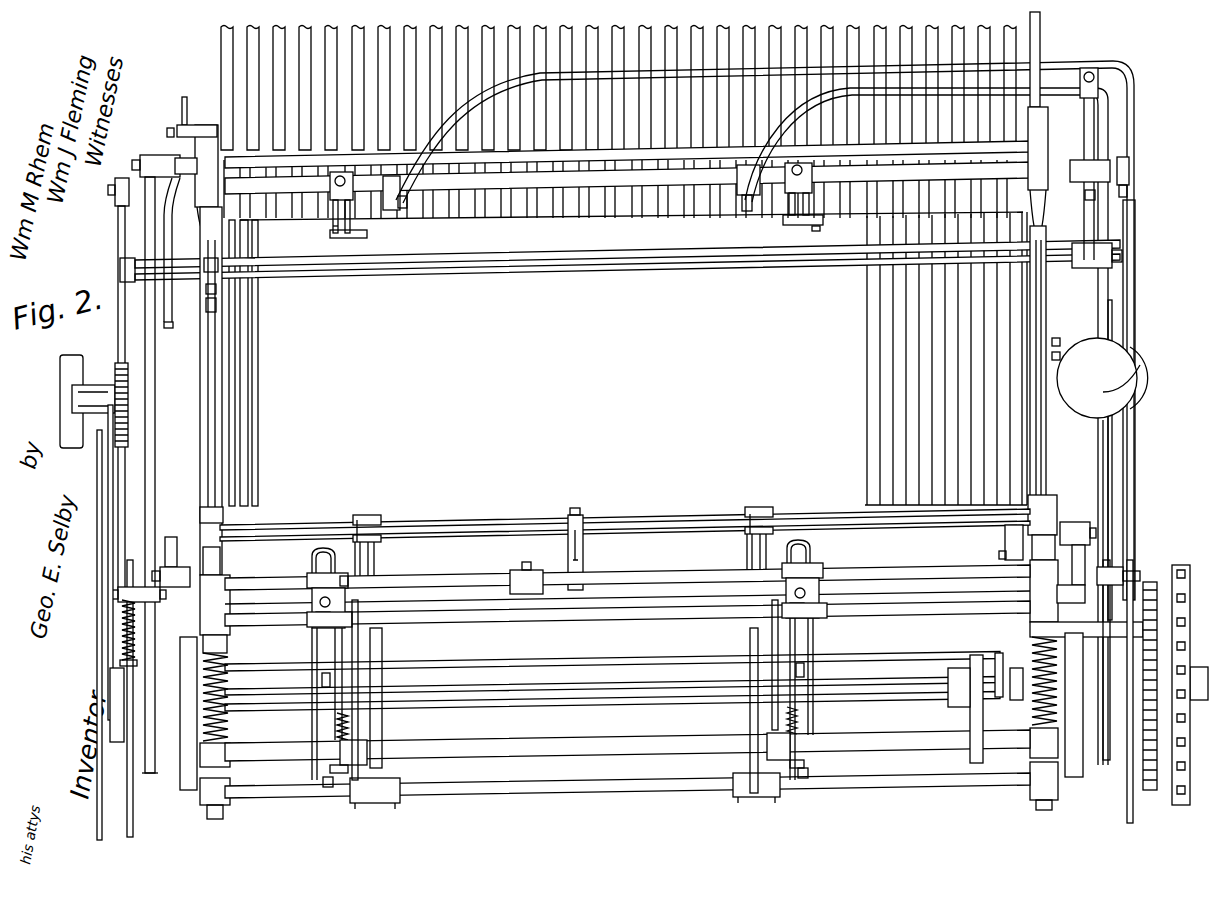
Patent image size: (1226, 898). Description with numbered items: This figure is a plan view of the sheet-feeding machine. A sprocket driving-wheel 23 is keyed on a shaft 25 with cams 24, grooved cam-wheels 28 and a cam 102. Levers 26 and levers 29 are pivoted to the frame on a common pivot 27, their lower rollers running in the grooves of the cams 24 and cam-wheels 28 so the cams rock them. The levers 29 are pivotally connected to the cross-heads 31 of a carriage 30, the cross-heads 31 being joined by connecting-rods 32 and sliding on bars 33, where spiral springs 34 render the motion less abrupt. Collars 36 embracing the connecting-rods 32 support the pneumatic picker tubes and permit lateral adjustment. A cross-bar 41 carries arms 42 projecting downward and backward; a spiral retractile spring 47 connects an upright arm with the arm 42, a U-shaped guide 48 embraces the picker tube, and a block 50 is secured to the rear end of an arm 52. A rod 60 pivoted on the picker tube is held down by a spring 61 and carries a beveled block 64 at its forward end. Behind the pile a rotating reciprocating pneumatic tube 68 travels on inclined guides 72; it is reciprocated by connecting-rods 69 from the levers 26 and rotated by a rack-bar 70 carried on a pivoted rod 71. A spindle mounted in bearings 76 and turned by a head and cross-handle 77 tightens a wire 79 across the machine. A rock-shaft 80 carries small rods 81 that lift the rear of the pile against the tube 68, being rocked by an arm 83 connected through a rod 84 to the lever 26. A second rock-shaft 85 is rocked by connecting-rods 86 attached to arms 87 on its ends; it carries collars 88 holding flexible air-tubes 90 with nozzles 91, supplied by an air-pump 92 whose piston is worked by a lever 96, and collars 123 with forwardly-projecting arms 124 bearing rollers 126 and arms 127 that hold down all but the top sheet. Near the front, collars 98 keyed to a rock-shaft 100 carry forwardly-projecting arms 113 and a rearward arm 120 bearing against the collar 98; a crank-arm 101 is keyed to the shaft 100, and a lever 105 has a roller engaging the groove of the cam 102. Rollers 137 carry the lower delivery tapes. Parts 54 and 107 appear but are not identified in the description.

The sprocket driving-wheel 23 is at (1181, 567).
The cams 24 is at (135, 760).
The shaft 25 is at (862, 700).
The levers 26 is at (118, 595).
The pivot 27 is at (130, 628).
The cam-wheels 28 is at (192, 790).
The levers 29 is at (175, 537).
The carriage 30 is at (627, 580).
The cross-heads 31 is at (626, 415).
The connecting-rods 32 is at (648, 573).
The bars 33 is at (220, 560).
The spiral springs 34 is at (230, 722).
The collars 36 is at (312, 580).
The cross-bar 41 is at (462, 752).
The arms 42 is at (368, 750).
The spiral retractile spring 47 is at (808, 708).
The U-shaped guide 48 is at (322, 680).
The block 50 is at (348, 583).
The arm 52 is at (380, 668).
The plate 54 is at (628, 359).
The rod 60 is at (336, 730).
The spring 61 is at (825, 637).
The block 64 is at (326, 787).
The rotating reciprocating pneumatic tube 68 is at (372, 282).
The connecting-rods 69 is at (1100, 438).
The rack-bar 70 is at (170, 328).
The rod 71 is at (181, 107).
The inclined guides 72 is at (216, 304).
The bearings 76 is at (222, 263).
The head and cross-handle 77 is at (218, 289).
The wire 79 is at (458, 278).
The rock-shaft 80 is at (627, 154).
The small rods 81 is at (600, 208).
The arm 83 is at (175, 162).
The rod 84 is at (155, 452).
The rock-shaft 85 is at (627, 178).
The connecting-rods 86 is at (118, 253).
The arms 87 is at (115, 200).
The collars 88 is at (394, 193).
The air-tubes 90 is at (431, 160).
The nozzles 91 is at (400, 210).
The air-pump 92 is at (1100, 378).
The lever 96 is at (1105, 473).
The collars 98 is at (368, 515).
The rock-shaft 100 is at (612, 538).
The crank-arm 101 is at (1008, 537).
The cam 102 is at (970, 718).
The lever 105 is at (1000, 655).
The screw 107 is at (999, 554).
The forwardly-projecting arms 113 is at (378, 551).
The arm 120 is at (354, 540).
The collars 123 is at (330, 184).
The forwardly-projecting arms 124 is at (350, 240).
The rollers 126 is at (816, 231).
The arms 127 is at (333, 228).
The rollers 137 is at (627, 625).